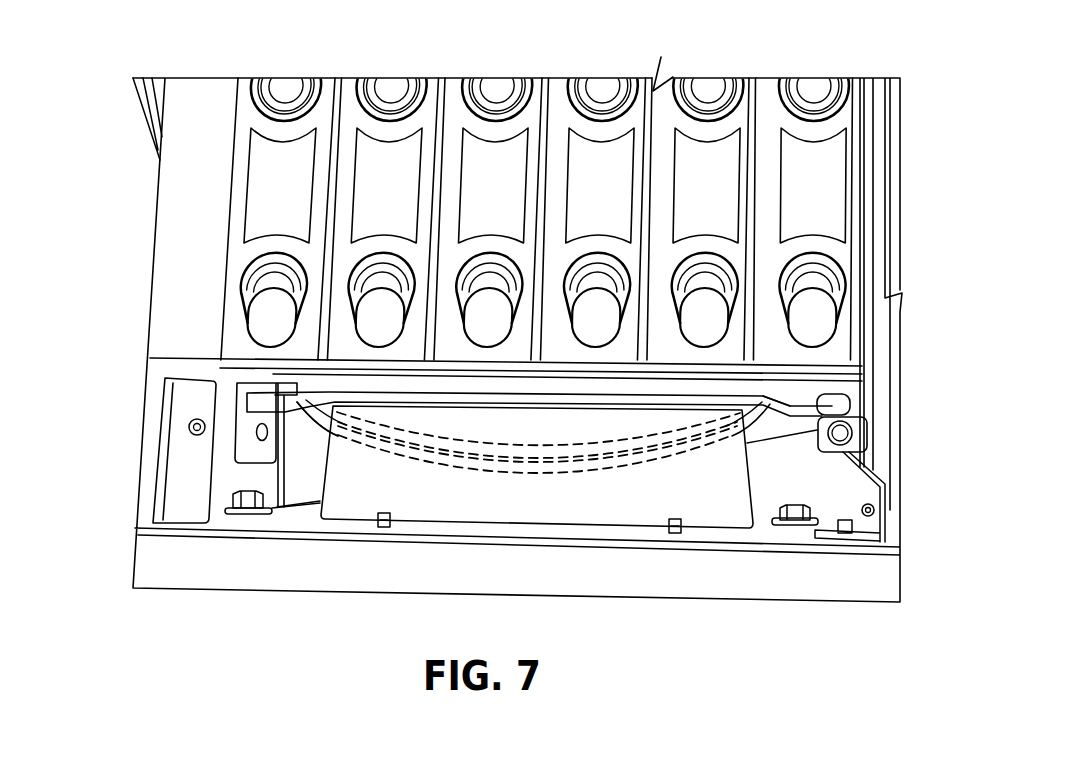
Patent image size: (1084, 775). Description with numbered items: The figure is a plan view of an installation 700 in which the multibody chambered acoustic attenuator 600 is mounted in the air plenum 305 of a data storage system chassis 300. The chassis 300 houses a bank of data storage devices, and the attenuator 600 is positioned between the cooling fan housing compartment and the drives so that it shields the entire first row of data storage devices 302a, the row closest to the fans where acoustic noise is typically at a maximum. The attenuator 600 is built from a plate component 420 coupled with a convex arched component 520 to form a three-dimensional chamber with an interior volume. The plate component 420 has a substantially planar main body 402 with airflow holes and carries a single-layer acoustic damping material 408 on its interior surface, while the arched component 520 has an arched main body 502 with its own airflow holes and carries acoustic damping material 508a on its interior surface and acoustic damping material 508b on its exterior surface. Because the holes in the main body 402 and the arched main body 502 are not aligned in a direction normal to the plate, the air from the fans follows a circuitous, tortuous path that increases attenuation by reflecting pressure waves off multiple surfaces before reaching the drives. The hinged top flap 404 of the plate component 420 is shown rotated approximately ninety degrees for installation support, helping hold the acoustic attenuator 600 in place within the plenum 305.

The installation 700 is at (133, 122).
The chassis 300 is at (155, 223).
The first row of data storage devices 302a is at (236, 70).
The acoustic damping material 408 is at (278, 386).
The plate component 420 is at (772, 395).
The main body 402 is at (803, 403).
The convex arched component 520 is at (305, 424).
The air plenum 305 is at (265, 522).
The acoustic damping material 508b is at (442, 463).
The arched main body 502 is at (550, 458).
The acoustic damping material 508a is at (628, 443).
The hinged top flap 404 is at (720, 512).
The acoustic attenuator 600 is at (503, 434).